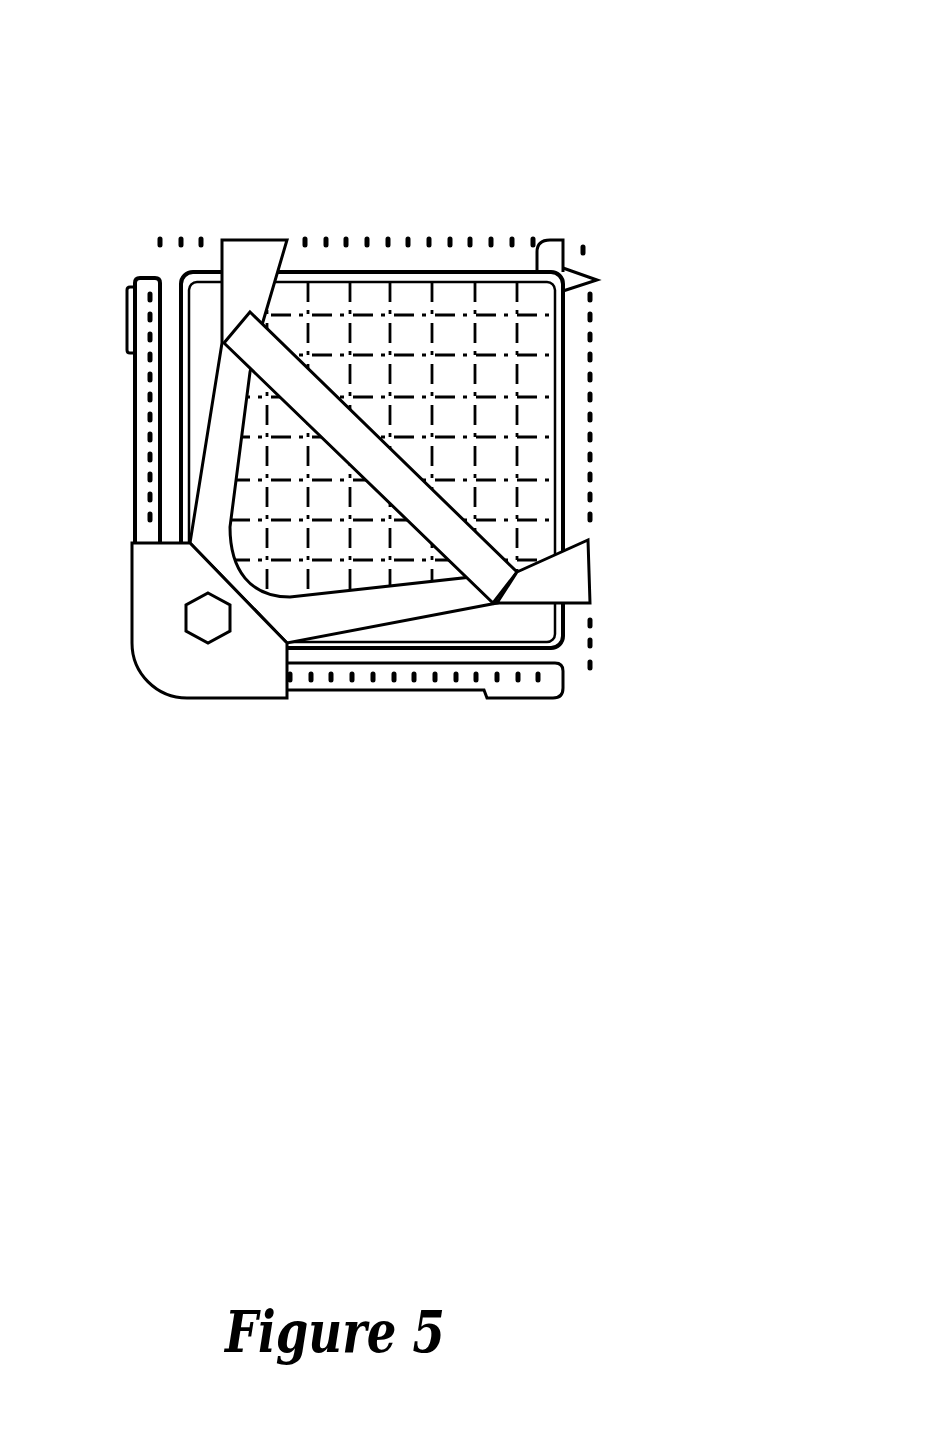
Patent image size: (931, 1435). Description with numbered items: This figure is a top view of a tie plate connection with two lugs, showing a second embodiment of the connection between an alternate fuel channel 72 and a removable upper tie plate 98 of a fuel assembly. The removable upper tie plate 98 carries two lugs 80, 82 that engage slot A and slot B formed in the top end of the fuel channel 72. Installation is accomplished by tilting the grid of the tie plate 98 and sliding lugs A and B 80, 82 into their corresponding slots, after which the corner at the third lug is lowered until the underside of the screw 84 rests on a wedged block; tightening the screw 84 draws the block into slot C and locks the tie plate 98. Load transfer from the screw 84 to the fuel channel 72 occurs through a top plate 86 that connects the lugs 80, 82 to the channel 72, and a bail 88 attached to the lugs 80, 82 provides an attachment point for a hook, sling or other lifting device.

The fuel channel 72 is at (145, 273).
The lug A 80 is at (260, 237).
The lug B 82 is at (592, 571).
The screw 84 is at (207, 645).
The top plate 86 is at (265, 653).
The bail 88 is at (515, 457).
The removable upper tie plate 98 is at (480, 270).